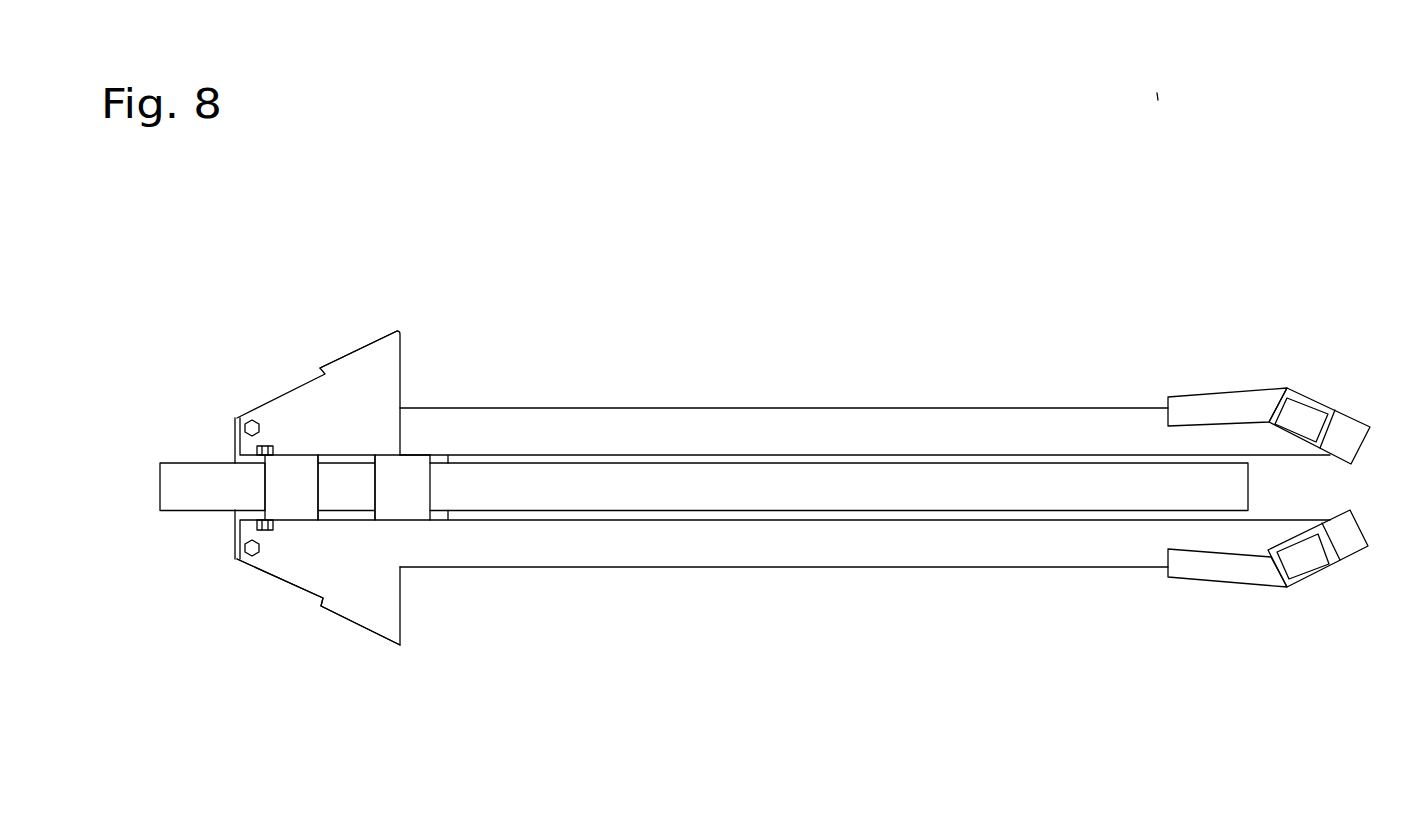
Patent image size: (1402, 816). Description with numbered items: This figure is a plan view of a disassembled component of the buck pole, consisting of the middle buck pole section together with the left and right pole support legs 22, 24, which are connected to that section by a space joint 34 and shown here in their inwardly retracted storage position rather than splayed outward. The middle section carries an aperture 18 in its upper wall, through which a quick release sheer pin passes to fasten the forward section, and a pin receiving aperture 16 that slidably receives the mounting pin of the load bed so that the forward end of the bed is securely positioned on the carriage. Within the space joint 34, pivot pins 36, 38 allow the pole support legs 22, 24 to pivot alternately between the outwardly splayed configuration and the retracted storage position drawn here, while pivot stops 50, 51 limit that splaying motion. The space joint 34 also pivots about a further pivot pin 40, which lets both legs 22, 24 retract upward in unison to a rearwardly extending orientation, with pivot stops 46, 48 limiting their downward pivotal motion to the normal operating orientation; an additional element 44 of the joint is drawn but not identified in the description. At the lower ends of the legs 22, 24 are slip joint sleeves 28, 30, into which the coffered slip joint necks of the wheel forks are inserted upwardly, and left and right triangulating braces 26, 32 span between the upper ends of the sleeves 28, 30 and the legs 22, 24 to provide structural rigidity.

The pin receiving aperture 16 is at (730, 484).
The aperture 18 is at (198, 487).
The left pole support leg 22 is at (925, 545).
The right pole support leg 24 is at (918, 435).
The left triangulating brace 26 is at (1219, 567).
The slip joint sleeve 28 is at (1345, 540).
The slip joint sleeve 30 is at (1342, 440).
The right triangulating brace 32 is at (1210, 405).
The space joint 34 is at (455, 349).
The pivot pin 36 is at (250, 557).
The pivot pin 38 is at (246, 423).
The pivot pin 40 is at (270, 530).
The spacer block 44 is at (348, 485).
The pivot stop 46 is at (295, 478).
The pivot stop 48 is at (407, 487).
The pivot stop 50 is at (348, 622).
The pivot stop 51 is at (351, 355).